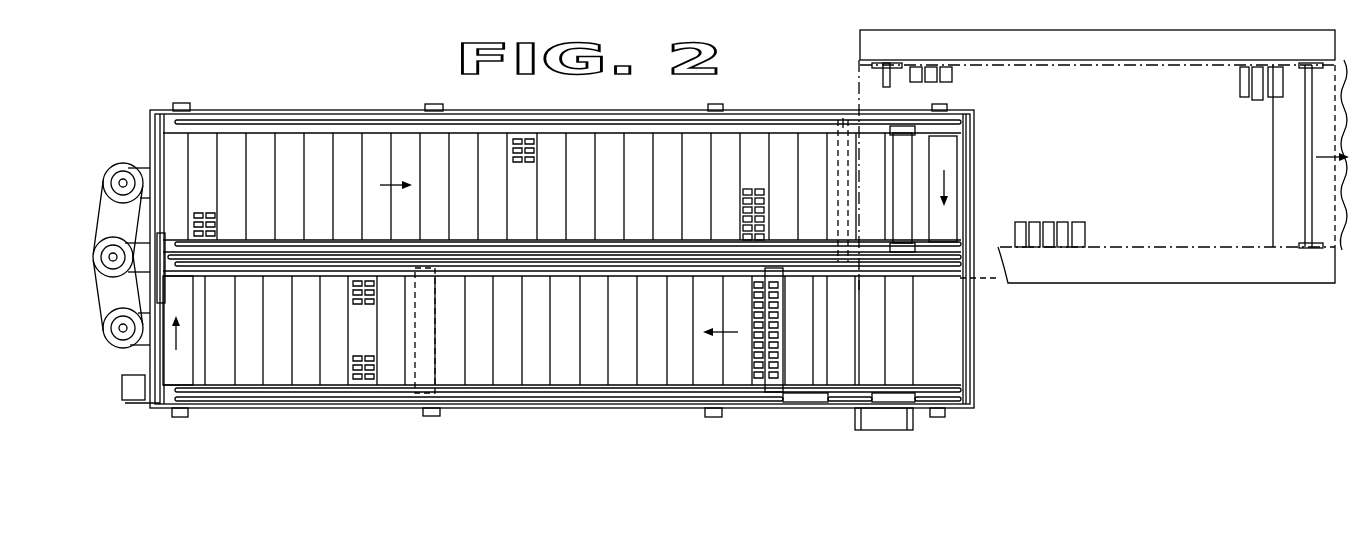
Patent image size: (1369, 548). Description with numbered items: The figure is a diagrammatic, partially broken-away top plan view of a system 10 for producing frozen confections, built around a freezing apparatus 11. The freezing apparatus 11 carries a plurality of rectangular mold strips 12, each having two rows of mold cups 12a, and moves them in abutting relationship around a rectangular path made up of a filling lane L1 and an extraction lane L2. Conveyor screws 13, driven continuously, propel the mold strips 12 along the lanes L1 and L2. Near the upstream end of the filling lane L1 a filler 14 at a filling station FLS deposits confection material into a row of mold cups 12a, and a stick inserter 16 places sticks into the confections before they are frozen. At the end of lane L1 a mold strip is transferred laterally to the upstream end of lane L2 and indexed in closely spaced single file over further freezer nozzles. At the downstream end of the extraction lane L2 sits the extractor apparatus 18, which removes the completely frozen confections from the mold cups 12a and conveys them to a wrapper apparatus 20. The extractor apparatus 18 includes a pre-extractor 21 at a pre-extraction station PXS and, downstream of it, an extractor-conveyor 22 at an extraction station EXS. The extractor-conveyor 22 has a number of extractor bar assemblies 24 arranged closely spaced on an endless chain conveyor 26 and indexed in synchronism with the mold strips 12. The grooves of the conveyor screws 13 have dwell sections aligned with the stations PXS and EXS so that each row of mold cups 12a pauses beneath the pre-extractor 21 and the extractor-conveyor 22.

The system for producing frozen confections 10 is at (334, 94).
The freezing apparatus 11 is at (277, 108).
The mold strips 12 is at (583, 133).
The mold cups 12a is at (528, 137).
The conveyor screws 13 is at (384, 125).
The filler 14 is at (745, 410).
The stick inserter 16 is at (436, 355).
The extractor apparatus 18 is at (1090, 38).
The wrapper apparatus 20 is at (1285, 137).
The pre-extractor 21 is at (833, 130).
The extractor-conveyor 22 is at (948, 65).
The extractor bar assemblies 24 is at (1250, 98).
The endless chain conveyor 26 is at (1183, 69).
The filling lane L1 is at (942, 333).
The extraction lane L2 is at (970, 170).
The pre-extraction station PXS is at (843, 108).
The extraction station EXS is at (912, 110).
The filling station FLS is at (775, 402).